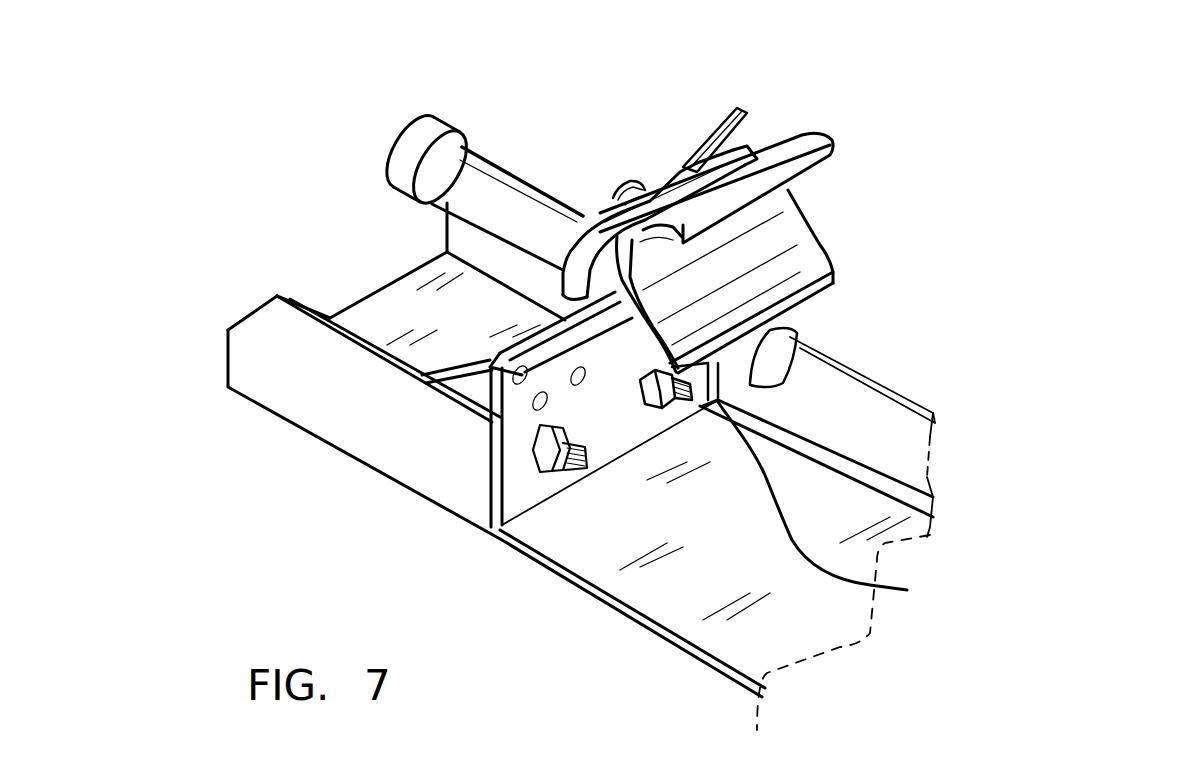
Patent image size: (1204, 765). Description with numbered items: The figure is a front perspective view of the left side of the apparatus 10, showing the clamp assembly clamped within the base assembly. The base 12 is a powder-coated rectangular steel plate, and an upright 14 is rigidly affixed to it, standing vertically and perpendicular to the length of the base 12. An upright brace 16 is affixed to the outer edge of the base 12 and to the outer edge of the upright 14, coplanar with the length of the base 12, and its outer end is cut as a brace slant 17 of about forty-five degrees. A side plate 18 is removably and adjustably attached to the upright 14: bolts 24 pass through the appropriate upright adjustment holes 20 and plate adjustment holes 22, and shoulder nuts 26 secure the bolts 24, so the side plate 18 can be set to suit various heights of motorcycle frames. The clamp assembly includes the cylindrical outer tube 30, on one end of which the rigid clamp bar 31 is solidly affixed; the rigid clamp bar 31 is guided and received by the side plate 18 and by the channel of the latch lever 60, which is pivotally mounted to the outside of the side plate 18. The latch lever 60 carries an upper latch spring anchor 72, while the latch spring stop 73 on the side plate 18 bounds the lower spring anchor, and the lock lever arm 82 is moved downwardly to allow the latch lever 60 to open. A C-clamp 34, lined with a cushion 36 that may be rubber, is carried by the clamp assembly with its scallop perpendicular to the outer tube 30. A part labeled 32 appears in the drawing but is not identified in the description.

The apparatus 10 is at (983, 333).
The base 12 is at (357, 300).
The upright 14 is at (502, 400).
The upright brace 16 is at (277, 293).
The brace slant 17 is at (247, 313).
The side plate 18 is at (530, 350).
The upright adjustment holes 20 is at (533, 402).
The plate adjustment holes 22 is at (513, 377).
The bolt 24 is at (907, 590).
The shoulder nut 26 is at (676, 380).
The outer tube 30 is at (884, 410).
The rigid clamp bar 31 is at (483, 167).
The rod head 32 is at (390, 143).
The C-clamp 34 is at (833, 268).
The cushion 36 is at (788, 200).
The latch lever 60 is at (590, 222).
The upper latch spring anchor 72 is at (638, 185).
The latch spring stop 73 is at (620, 182).
The lock lever arm 82 is at (747, 117).